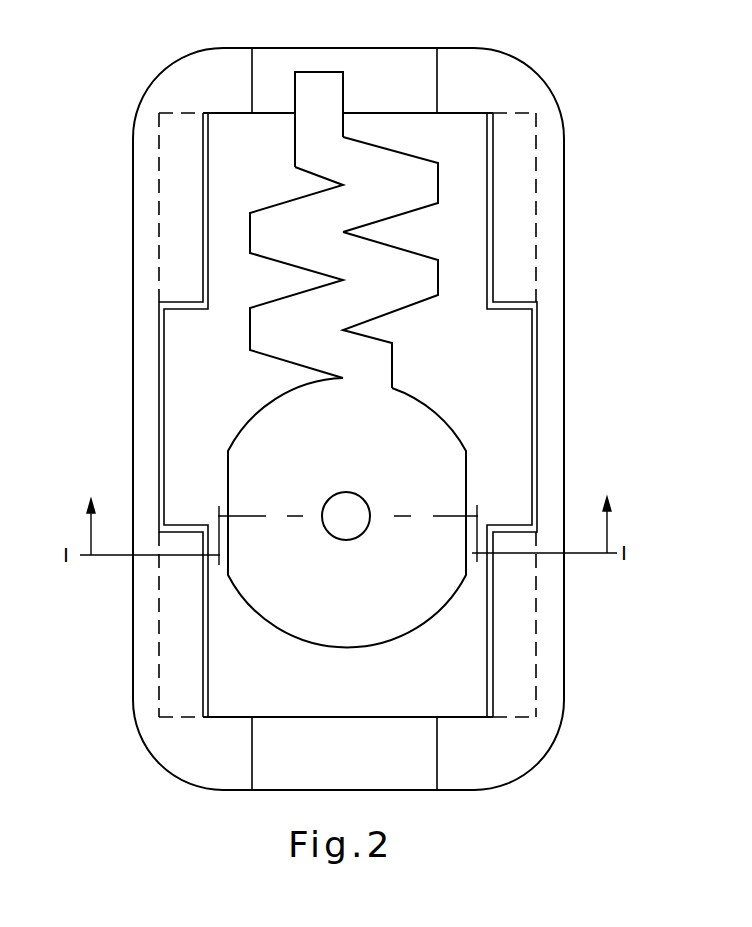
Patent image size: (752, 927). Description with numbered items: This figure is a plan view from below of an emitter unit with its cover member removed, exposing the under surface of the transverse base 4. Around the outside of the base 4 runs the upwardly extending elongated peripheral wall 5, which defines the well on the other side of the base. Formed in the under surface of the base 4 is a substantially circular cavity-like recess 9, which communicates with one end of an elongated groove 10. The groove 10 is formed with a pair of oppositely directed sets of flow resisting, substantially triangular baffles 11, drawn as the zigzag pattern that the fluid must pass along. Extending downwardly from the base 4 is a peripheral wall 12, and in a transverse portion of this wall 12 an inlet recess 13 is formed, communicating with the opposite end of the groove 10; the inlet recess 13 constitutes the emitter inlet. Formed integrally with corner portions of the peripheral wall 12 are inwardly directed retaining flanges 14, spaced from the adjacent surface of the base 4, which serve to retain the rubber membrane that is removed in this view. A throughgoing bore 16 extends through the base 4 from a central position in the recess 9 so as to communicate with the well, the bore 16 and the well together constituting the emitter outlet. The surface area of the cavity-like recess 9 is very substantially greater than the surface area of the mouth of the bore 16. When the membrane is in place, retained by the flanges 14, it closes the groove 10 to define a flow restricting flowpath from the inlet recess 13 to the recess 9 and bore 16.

The transverse base 4 is at (503, 386).
The elongated peripheral wall 5 is at (517, 525).
The cavity-like recess 9 is at (445, 479).
The elongated groove 10 is at (427, 185).
The flow resisting baffles 11 is at (388, 232).
The peripheral wall 12 is at (550, 335).
The inlet recess 13 is at (320, 83).
The retaining flanges 14 is at (518, 633).
The throughgoing bore 16 is at (347, 512).